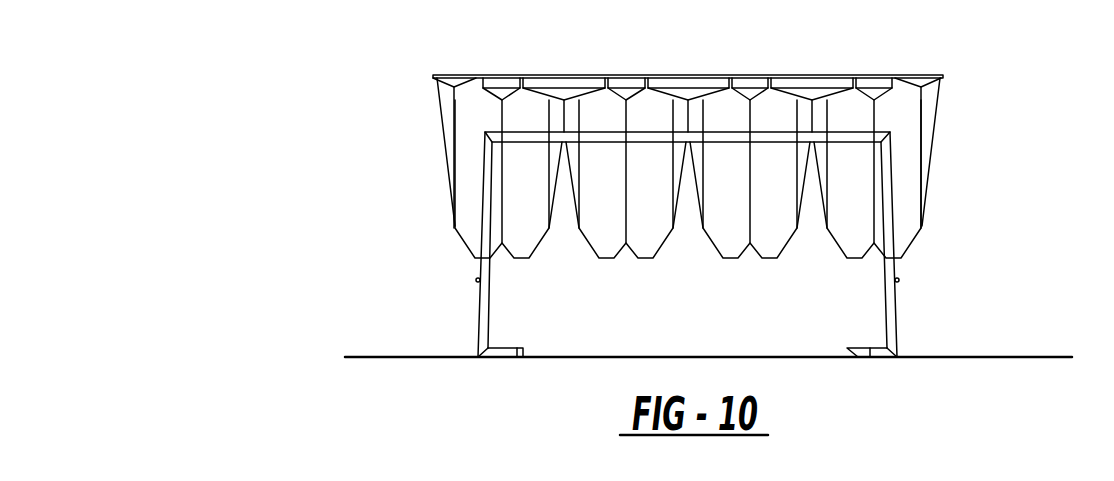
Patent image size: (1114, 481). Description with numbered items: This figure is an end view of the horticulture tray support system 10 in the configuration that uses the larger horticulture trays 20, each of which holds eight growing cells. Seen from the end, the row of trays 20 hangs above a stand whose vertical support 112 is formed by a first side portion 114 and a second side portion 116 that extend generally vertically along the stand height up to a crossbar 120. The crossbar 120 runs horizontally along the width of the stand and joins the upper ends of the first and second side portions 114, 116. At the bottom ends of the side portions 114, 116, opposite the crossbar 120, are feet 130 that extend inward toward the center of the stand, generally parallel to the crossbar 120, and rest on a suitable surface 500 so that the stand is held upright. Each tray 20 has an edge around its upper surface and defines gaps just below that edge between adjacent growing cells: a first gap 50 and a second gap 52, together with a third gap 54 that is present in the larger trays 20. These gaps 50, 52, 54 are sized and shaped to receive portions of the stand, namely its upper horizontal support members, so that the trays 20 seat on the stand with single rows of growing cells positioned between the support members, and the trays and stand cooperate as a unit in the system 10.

The horticulture tray support system 10 is at (348, 97).
The horticulture tray 20 is at (502, 76).
The first gap 50 is at (562, 131).
The second gap 52 is at (688, 130).
The third gap 54 is at (817, 132).
The vertical support 112 is at (480, 315).
The first side portion 114 is at (485, 180).
The second side portion 116 is at (892, 198).
The crossbar 120 is at (857, 133).
The foot 130 is at (508, 348).
The surface 500 is at (1018, 357).